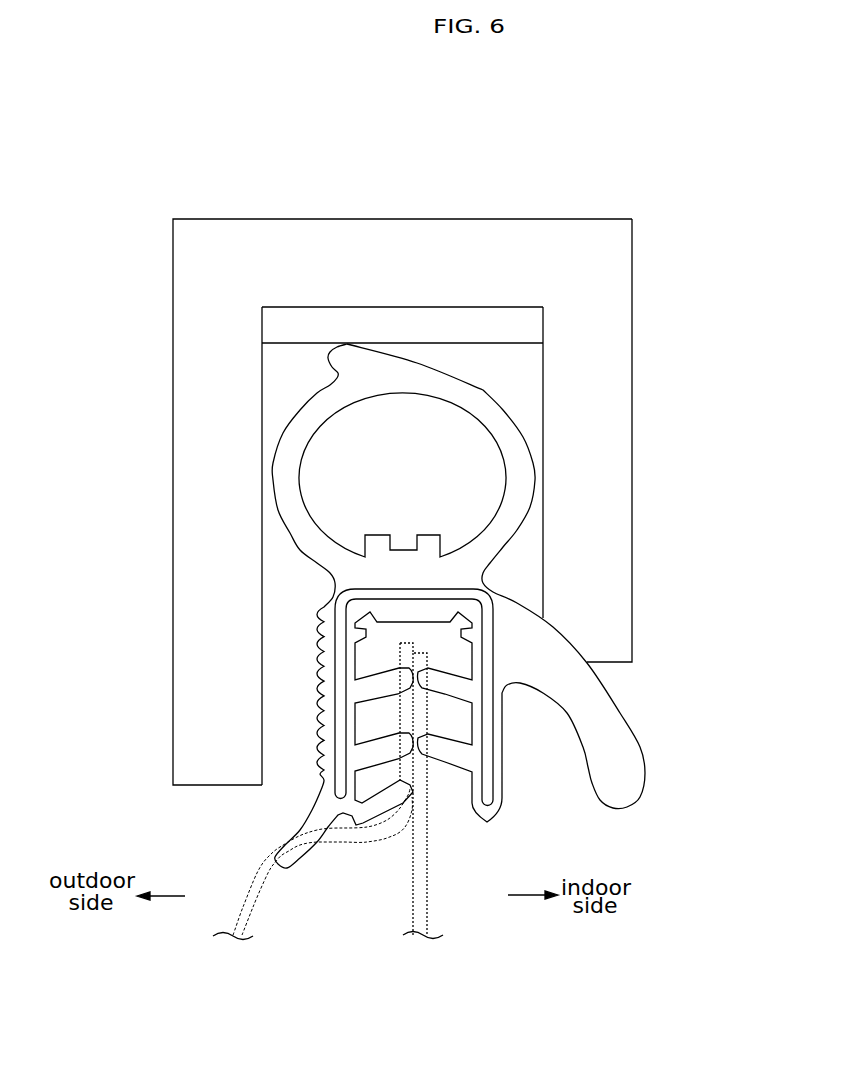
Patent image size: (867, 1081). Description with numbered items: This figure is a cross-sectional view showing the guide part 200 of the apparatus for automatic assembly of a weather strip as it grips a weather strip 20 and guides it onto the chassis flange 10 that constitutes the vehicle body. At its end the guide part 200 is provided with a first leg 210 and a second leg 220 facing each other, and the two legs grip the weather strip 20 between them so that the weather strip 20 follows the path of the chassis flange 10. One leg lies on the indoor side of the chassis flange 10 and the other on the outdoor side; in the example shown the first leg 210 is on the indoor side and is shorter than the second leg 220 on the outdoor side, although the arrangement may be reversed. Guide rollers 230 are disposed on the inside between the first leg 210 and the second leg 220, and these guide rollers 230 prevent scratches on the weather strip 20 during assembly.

The chassis flange 10 is at (422, 867).
The weather strip 20 is at (637, 777).
The guide part 200 is at (422, 458).
The first leg 210 is at (617, 552).
The second leg 220 is at (188, 562).
The guide rollers 230 is at (412, 328).